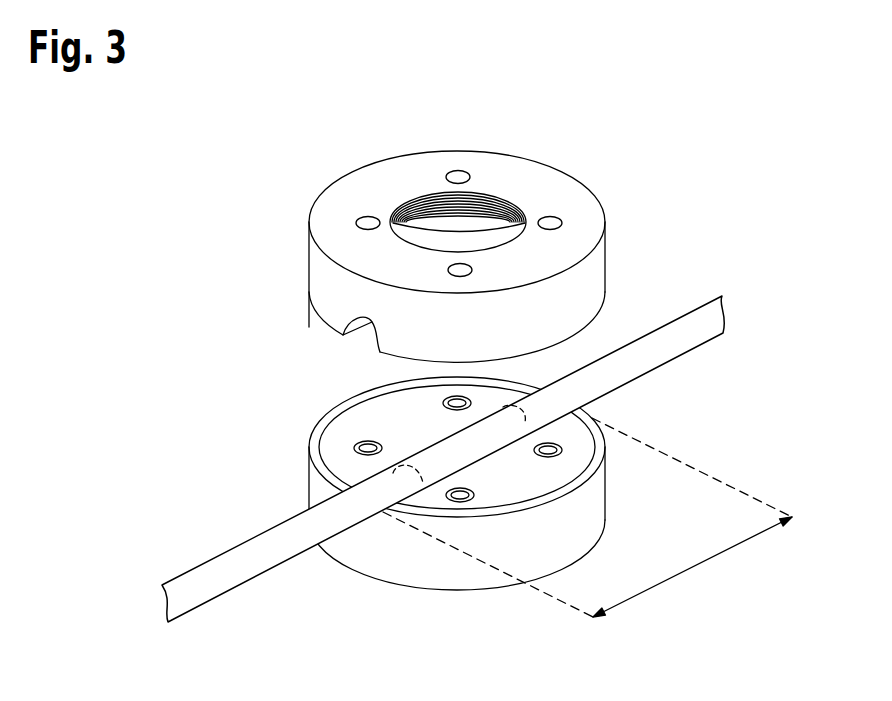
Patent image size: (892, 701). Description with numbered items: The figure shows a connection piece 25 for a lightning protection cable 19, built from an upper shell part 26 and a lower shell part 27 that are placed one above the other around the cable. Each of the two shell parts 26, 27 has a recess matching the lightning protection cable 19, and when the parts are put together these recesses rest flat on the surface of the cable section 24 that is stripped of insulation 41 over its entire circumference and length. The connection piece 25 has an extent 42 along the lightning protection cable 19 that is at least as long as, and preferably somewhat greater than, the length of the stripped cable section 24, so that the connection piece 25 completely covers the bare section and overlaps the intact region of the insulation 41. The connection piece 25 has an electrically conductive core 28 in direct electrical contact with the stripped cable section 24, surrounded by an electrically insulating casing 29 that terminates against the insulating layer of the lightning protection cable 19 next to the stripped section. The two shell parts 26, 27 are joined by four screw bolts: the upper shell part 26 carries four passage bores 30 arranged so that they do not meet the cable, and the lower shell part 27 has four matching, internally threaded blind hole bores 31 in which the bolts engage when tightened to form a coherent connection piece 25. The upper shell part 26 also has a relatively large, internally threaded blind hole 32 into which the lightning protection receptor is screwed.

The lightning protection cable 19 is at (685, 327).
The cable section stripped of insulation 24 is at (458, 483).
The connection piece 25 is at (648, 142).
The upper shell part 26 is at (457, 223).
The lower shell part 27 is at (607, 497).
The core 28 is at (378, 415).
The electrically insulating casing 29 is at (317, 438).
The passage bores 30 is at (456, 170).
The blind hole bores 31 is at (557, 448).
The blind hole 32 is at (480, 242).
The insulation 41 is at (412, 472).
The extent 42 is at (687, 575).